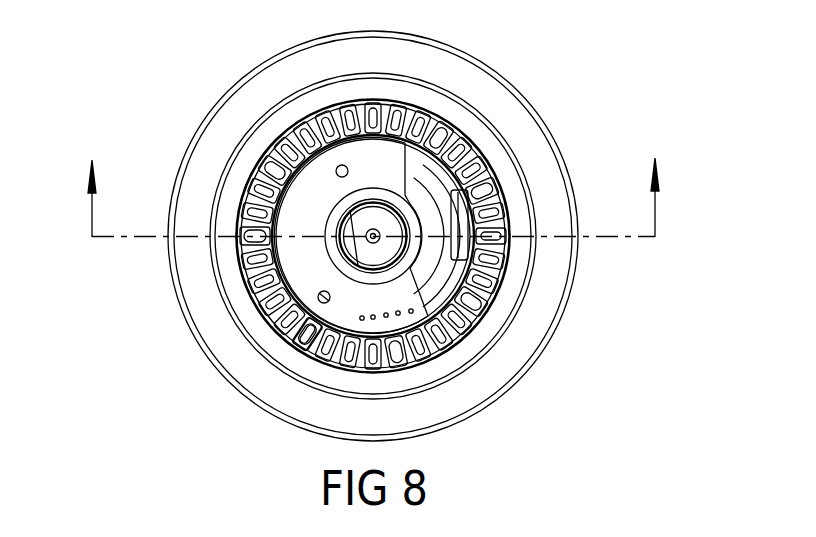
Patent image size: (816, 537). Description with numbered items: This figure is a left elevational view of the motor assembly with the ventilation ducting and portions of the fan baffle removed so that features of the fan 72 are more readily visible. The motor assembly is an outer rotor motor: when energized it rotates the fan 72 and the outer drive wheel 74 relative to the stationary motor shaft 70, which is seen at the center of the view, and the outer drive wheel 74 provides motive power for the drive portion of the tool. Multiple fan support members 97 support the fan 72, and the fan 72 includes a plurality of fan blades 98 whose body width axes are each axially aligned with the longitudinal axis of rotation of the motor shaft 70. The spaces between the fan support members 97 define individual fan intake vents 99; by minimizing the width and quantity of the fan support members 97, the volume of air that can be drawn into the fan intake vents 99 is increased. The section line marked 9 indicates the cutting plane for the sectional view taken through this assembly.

The motor shaft 70 is at (393, 223).
The fan 72 is at (270, 163).
The outer drive wheel 74 is at (458, 66).
The fan support members 97 is at (240, 268).
The fan blades 98 is at (238, 210).
The fan intake vents 99 is at (262, 317).
The section line 9- 9 is at (371, 197).